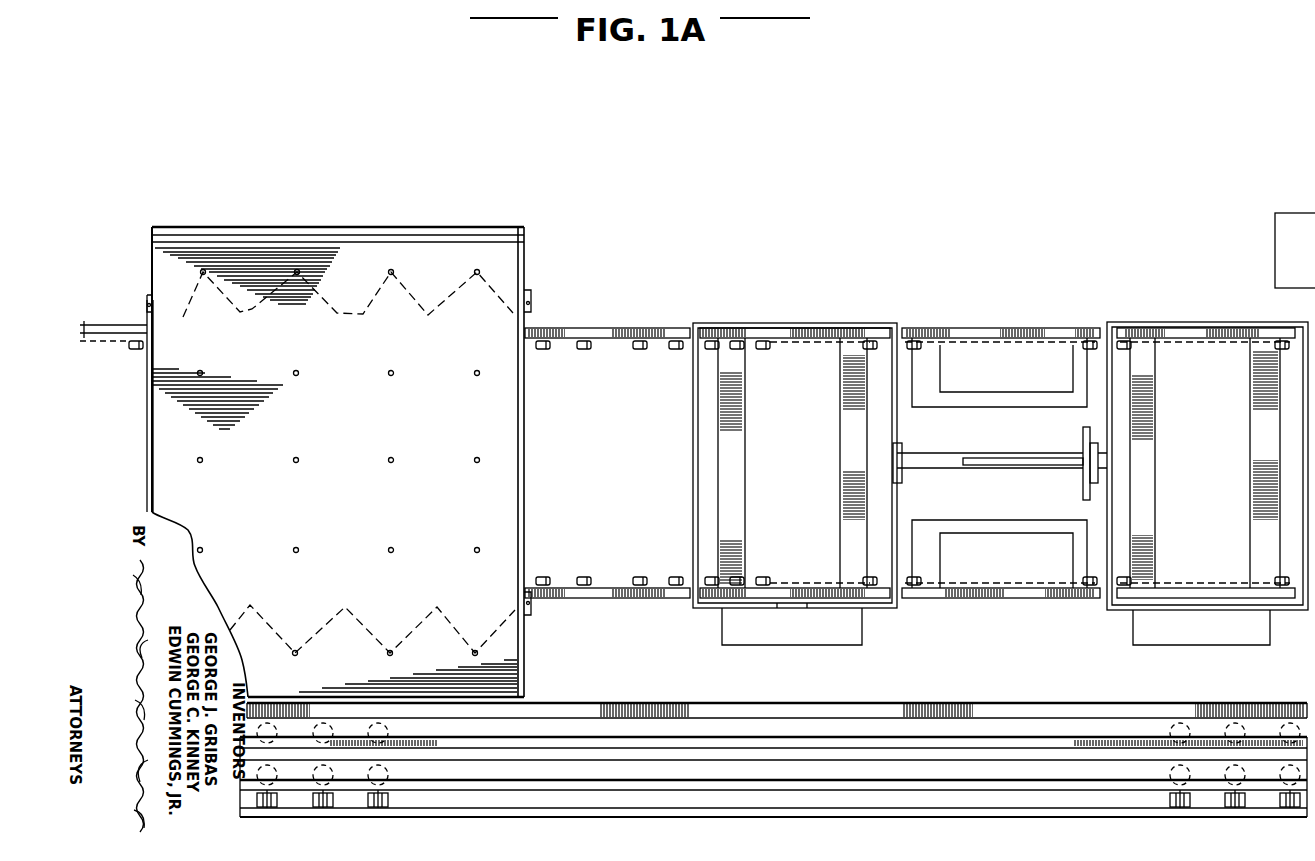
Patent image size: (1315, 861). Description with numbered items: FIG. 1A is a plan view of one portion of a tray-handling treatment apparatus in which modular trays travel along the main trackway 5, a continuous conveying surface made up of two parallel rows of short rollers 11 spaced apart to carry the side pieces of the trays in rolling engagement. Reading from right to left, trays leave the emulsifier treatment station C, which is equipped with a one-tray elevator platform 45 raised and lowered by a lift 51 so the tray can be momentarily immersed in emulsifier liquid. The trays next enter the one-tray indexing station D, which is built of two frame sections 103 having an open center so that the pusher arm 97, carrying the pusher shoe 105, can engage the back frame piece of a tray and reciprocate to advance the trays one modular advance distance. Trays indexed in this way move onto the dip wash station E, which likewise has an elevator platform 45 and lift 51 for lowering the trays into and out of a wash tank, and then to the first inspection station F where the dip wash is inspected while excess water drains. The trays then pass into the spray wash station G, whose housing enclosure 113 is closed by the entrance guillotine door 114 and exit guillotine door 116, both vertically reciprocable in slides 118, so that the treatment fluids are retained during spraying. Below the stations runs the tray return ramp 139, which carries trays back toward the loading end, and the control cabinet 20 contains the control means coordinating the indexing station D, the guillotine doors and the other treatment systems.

The main trackway 5 is at (1000, 476).
The short rollers 11 is at (584, 350).
The control cabinet 20 is at (1275, 250).
The elevator platform 45 is at (843, 492).
The lift 51 is at (776, 631).
The pusher arm 97 is at (1018, 453).
The frame sections 103 is at (985, 402).
The pusher shoe 105 is at (1084, 490).
The housing enclosure 113 is at (377, 227).
The entrance guillotine door 114 is at (527, 478).
The exit guillotine door 116 is at (147, 397).
The slides 118 is at (147, 300).
The tray return ramp 139 is at (601, 692).
The spray wash station G is at (334, 462).
The first inspection station F is at (584, 322).
The dip wash station E is at (760, 315).
The indexing station D is at (952, 315).
The emulsifier treatment station C is at (1141, 315).